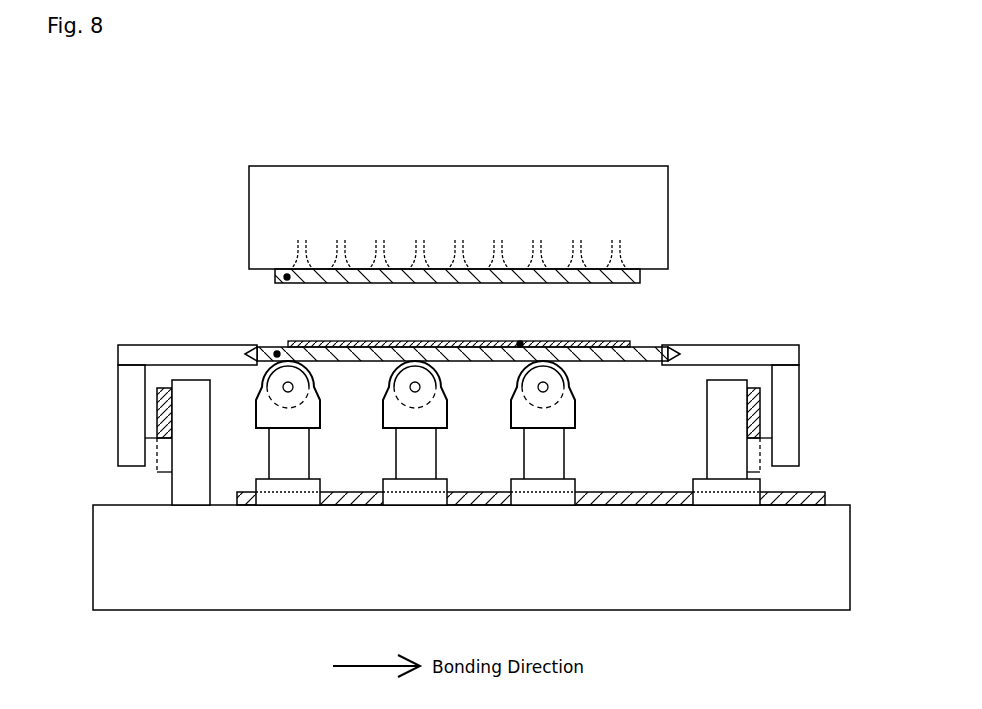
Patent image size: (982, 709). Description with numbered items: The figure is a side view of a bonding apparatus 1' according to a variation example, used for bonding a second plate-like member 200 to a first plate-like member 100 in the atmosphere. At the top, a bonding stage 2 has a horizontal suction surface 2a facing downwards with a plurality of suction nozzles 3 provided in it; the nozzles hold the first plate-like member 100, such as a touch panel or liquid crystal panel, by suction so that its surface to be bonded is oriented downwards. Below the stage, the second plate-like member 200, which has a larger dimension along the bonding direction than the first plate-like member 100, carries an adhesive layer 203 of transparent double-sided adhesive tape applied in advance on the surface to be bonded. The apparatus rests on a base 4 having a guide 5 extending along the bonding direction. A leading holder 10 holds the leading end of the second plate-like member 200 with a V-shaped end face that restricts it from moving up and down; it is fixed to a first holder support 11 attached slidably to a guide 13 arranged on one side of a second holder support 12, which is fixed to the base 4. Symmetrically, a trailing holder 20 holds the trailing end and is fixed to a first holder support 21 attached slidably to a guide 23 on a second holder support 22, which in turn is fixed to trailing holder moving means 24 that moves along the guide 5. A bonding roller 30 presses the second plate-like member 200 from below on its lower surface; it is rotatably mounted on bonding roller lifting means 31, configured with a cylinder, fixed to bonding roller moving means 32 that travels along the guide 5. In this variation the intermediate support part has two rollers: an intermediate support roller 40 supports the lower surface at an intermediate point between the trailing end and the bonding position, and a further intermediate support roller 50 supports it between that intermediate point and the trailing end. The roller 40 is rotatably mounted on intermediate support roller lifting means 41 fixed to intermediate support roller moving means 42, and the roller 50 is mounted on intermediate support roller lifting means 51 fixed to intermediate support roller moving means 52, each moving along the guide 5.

The bonding apparatus 1' is at (161, 158).
The bonding stage 2 is at (663, 222).
The suction surface 2a is at (656, 272).
The suction nozzles 3 is at (381, 239).
The base 4 is at (193, 604).
The guide 5 is at (637, 500).
The leading holder 10 is at (173, 345).
The first holder support 11 is at (130, 400).
The second holder support 12 is at (172, 498).
The guide 13 is at (158, 424).
The trailing holder 20 is at (745, 350).
The first holder support 21 is at (790, 400).
The second holder support 22 is at (715, 438).
The guide 23 is at (762, 426).
The trailing holder moving means 24 is at (760, 487).
The bonding roller 30 is at (313, 372).
The bonding roller lifting means 31 is at (300, 447).
The bonding roller moving means 32 is at (315, 488).
The intermediate support roller 40 is at (440, 372).
The intermediate support roller lifting means 41 is at (427, 447).
The intermediate support roller moving means 42 is at (442, 488).
The intermediate support roller 50 is at (568, 372).
The intermediate support roller lifting means 51 is at (555, 447).
The intermediate support roller moving means 52 is at (570, 488).
The first plate-like member 100 is at (284, 278).
The second plate-like member 200 is at (276, 351).
The adhesive layer 203 is at (522, 342).